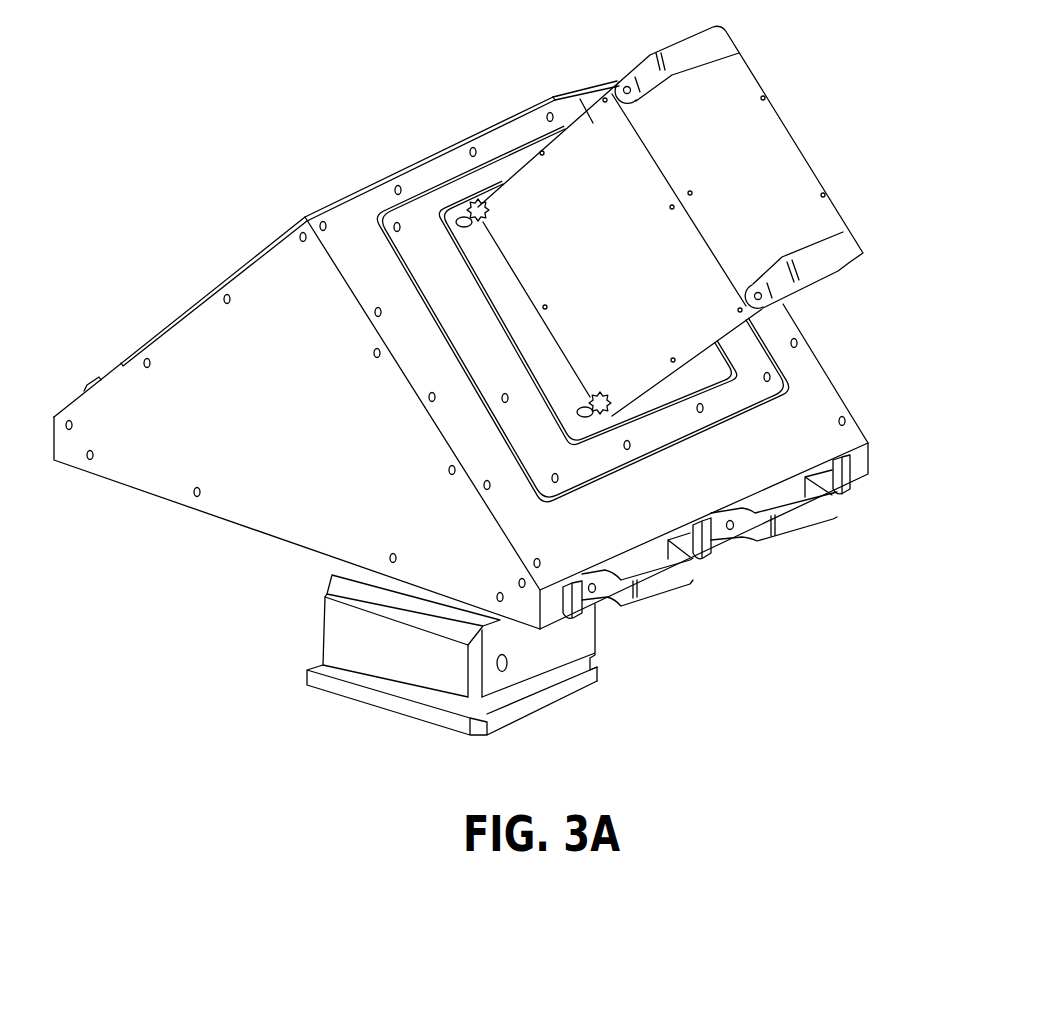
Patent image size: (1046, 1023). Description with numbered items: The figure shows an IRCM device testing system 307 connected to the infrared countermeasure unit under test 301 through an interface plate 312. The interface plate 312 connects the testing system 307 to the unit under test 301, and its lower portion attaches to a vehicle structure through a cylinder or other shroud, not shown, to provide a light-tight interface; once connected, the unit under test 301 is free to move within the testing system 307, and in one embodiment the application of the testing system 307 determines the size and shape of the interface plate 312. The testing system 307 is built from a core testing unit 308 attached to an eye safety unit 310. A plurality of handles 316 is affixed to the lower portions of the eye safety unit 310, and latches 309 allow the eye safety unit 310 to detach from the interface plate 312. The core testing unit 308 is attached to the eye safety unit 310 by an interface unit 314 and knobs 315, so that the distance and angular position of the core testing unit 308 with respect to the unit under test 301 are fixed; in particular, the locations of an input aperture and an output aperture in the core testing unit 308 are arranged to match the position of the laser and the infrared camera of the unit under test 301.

The testing system 307 is at (172, 56).
The unit under test 301 is at (340, 640).
The core testing unit 308 is at (598, 133).
The latches 309 is at (713, 556).
The eye safety unit 310 is at (217, 353).
The interface plate 312 is at (220, 519).
The interface unit 314 is at (355, 178).
The knobs 315 is at (606, 394).
The handles 316 is at (665, 583).